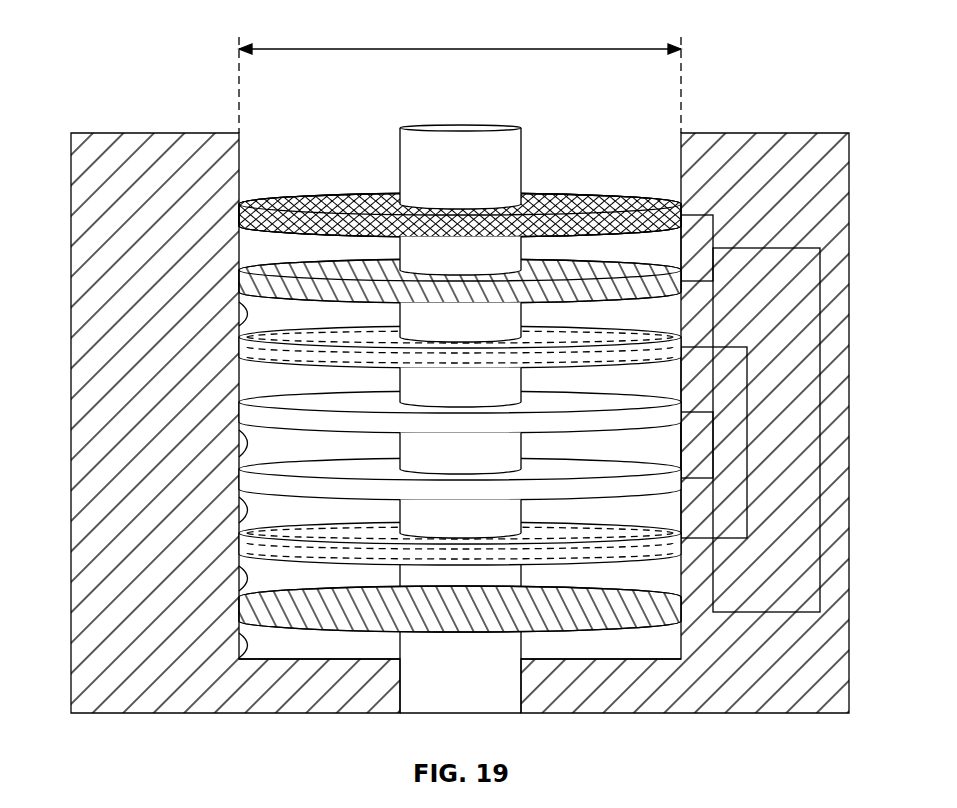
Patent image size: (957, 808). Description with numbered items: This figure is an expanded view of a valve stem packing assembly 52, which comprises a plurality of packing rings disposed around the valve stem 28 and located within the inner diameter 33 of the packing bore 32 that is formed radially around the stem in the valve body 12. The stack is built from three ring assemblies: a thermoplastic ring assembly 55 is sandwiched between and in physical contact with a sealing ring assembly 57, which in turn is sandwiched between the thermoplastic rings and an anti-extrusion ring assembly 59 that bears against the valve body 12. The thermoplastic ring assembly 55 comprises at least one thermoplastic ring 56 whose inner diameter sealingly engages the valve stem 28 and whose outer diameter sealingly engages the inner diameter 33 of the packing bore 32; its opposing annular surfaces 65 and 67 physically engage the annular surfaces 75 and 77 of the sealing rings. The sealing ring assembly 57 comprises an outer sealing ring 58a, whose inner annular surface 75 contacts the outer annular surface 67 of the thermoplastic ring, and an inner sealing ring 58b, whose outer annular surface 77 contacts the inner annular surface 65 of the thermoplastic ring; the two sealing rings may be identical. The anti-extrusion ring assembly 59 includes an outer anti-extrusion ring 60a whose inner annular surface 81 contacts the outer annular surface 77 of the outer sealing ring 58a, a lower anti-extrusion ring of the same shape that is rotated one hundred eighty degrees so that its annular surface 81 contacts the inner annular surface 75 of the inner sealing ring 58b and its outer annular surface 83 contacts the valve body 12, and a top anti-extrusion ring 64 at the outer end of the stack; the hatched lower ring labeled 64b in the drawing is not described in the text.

The valve body 12 is at (797, 132).
The valve stem 28 is at (399, 160).
The packing bore 32 is at (273, 664).
The inner diameter of the packing bore 33 is at (461, 48).
The valve stem packing assembly 52 is at (564, 171).
The thermoplastic ring assembly 55 is at (716, 438).
The thermoplastic ring 56 is at (240, 412).
The sealing ring assembly 57 is at (747, 497).
The outer sealing ring 58a is at (240, 352).
The inner sealing ring 58b is at (240, 545).
The anti-extrusion ring assembly 59 is at (821, 425).
The outer anti-extrusion ring 60a is at (240, 285).
The top anti-extrusion ring 64 is at (240, 212).
The lower friction disc 64b is at (240, 612).
The inner annular surface of the thermoplastic ring 65 is at (242, 452).
The outer annular surface of the thermoplastic ring 67 is at (315, 400).
The inner annular surface of the sealing ring 75 is at (678, 362).
The outer annular surface of the sealing ring 77 is at (656, 333).
The annular surface of the anti-extrusion ring 81 is at (242, 320).
The outer annular surface of the lower anti-extrusion ring 83 is at (242, 651).